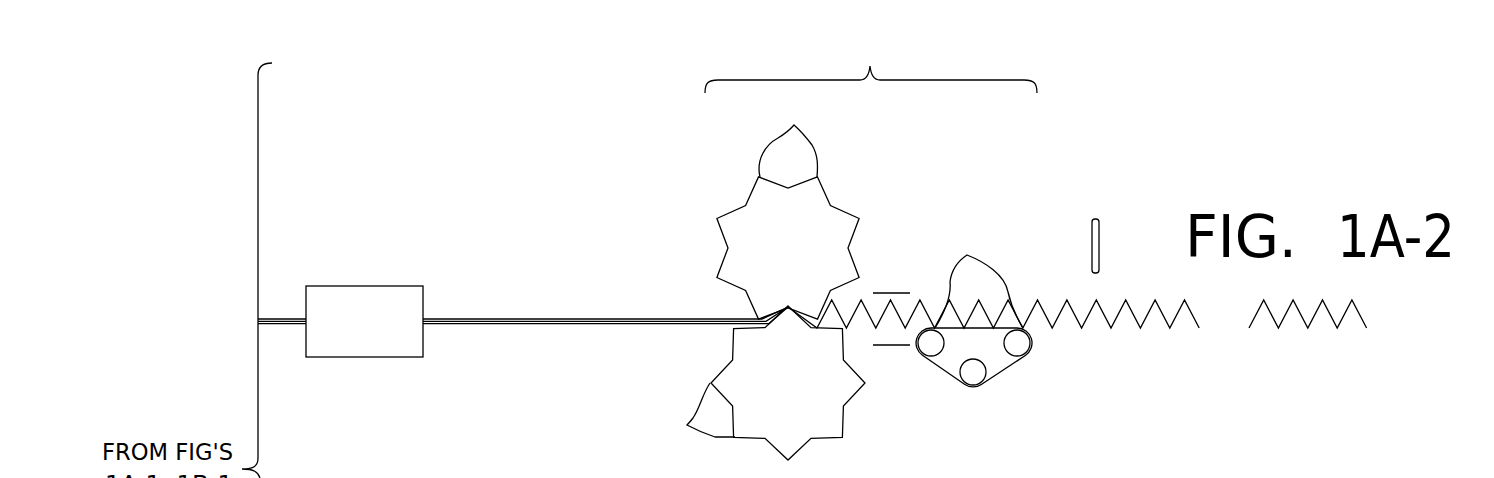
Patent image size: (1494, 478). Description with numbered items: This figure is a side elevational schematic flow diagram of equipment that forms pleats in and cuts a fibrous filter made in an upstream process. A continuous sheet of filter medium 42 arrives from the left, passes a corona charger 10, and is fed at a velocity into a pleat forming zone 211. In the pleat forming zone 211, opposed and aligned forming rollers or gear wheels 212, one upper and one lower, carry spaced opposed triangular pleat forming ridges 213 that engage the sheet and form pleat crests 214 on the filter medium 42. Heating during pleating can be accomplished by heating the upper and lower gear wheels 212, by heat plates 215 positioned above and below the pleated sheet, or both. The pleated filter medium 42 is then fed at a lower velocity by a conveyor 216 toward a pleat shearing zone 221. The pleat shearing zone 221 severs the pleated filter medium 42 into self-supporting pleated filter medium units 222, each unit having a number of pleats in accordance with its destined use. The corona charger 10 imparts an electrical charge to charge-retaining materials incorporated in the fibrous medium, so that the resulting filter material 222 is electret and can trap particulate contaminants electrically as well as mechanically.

The corona charger 10 is at (375, 297).
The filter medium 42 is at (527, 318).
The pleat forming zone 211 is at (871, 65).
The forming rollers or gear wheels 212 is at (809, 258).
The triangular pleat forming ridges 213 is at (794, 125).
The pleat crests 214 is at (979, 277).
The heat plates 215 is at (892, 290).
The conveyor 216 is at (1002, 363).
The pleat shearing zone 221 is at (1099, 240).
The pleated filter medium units 222 is at (1287, 317).